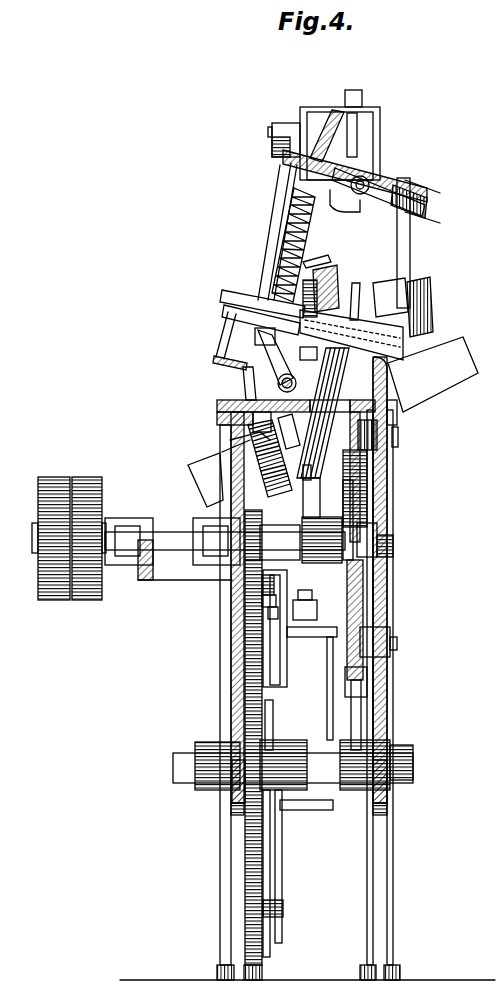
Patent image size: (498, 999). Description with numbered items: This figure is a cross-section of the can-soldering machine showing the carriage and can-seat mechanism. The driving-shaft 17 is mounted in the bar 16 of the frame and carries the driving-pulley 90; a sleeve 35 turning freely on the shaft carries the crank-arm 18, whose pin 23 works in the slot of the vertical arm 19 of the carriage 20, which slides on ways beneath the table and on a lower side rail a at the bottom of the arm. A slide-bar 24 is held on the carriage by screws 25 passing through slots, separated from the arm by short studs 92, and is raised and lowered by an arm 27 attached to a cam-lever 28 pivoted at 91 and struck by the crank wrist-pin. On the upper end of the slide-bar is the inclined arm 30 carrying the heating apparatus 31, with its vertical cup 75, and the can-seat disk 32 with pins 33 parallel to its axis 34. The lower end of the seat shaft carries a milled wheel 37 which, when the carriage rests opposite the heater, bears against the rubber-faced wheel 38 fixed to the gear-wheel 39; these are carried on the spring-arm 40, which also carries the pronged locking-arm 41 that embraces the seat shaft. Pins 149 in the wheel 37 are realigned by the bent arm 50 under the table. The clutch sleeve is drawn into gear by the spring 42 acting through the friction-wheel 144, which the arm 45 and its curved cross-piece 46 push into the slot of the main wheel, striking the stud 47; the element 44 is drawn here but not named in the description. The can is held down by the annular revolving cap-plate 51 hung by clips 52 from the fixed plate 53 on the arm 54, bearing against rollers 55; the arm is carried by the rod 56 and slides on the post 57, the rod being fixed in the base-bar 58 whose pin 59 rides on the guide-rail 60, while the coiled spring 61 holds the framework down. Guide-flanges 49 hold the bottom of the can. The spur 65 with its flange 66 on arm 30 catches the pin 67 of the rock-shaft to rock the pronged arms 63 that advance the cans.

The bar of the frame 16 is at (232, 574).
The driving-shaft 17 is at (160, 536).
The crank-arm 18 is at (310, 498).
The vertical arm of the carriage 19 is at (370, 492).
The carriage 20 is at (316, 674).
The pin 23 is at (380, 477).
The slide-bar 24 is at (365, 602).
The screws 25 is at (400, 433).
The arm 27 is at (389, 539).
The cam-lever 28 is at (367, 487).
The arm 30 is at (304, 359).
The heating apparatus 31 is at (382, 351).
The disk 32 is at (433, 369).
The pins 33 is at (359, 291).
The axis of the disk 34 is at (352, 415).
The sleeve 35 is at (223, 552).
The wheel 37 is at (274, 455).
The wheel 38 is at (240, 487).
The gear-wheel 39 is at (232, 444).
The spring-arm 40 is at (216, 454).
The locking-arm 41 is at (217, 404).
The spring 42 is at (262, 600).
The rack 44 is at (283, 578).
The arm 45 is at (287, 660).
The curved cross-piece 46 is at (310, 598).
The stud 47 is at (268, 612).
The guide-flanges 49 is at (417, 266).
The bent arm 50 is at (253, 418).
The annular revolving cap-plate 51 is at (377, 197).
The clips 52 is at (405, 212).
The plate 53 is at (428, 200).
The arm 54 is at (352, 166).
The rollers 55 is at (368, 180).
The rod 56 is at (283, 197).
The post 57 is at (340, 113).
The base-bar 58 is at (228, 294).
The pin 59 is at (218, 335).
The guide-rail 60 is at (226, 378).
The coiled spring 61 is at (286, 228).
The pronged arms 63 is at (266, 255).
The spur 65 is at (236, 325).
The flange 66 is at (262, 340).
The pin 67 is at (275, 365).
The cup 75 is at (428, 307).
The driving-pulley 90 is at (38, 514).
The pivot 91 is at (395, 547).
The studs 92 is at (398, 437).
The friction-wheel 144 is at (262, 588).
The pins 149 is at (318, 478).
The lower side rail a is at (358, 692).